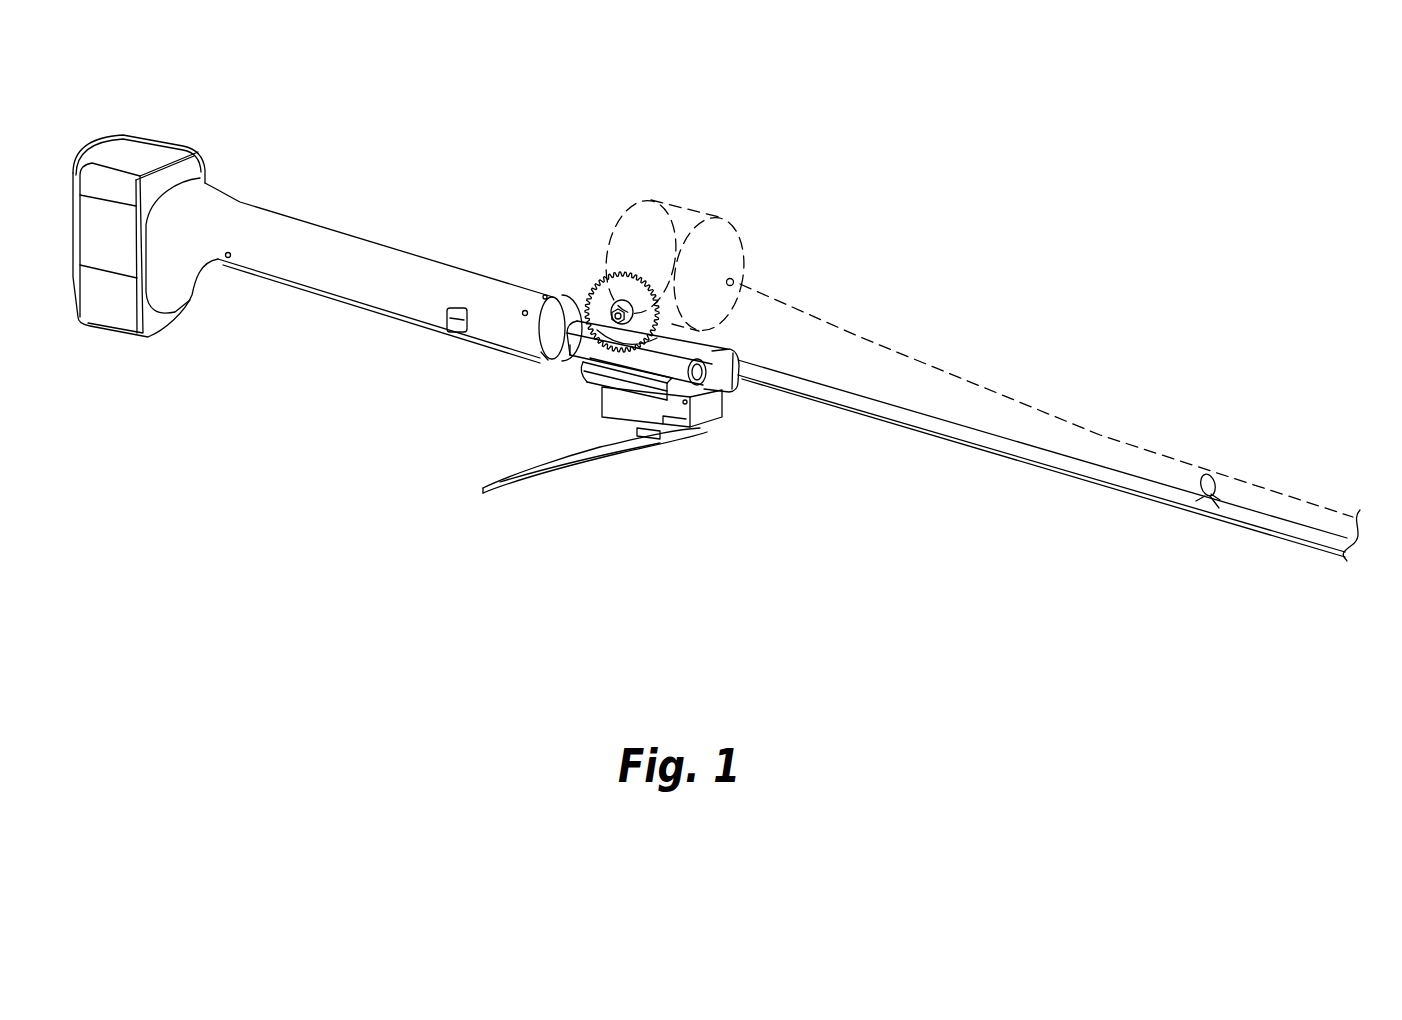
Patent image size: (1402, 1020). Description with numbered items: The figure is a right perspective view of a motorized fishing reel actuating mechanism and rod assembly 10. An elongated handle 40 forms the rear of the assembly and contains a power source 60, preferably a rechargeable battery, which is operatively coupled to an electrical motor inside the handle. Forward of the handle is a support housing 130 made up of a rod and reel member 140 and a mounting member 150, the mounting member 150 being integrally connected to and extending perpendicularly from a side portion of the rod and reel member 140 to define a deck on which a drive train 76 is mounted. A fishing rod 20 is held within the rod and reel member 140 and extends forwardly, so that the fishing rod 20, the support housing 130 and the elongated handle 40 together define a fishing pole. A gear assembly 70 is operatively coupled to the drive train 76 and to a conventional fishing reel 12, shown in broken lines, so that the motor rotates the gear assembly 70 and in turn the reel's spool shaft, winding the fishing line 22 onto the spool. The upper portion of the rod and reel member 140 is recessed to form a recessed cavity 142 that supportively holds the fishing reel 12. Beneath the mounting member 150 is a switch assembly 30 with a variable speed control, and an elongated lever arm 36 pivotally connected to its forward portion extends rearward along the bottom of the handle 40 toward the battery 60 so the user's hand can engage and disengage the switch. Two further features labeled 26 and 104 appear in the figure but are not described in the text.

The motorized fishing reel actuating mechanism and rod assembly 10 is at (925, 234).
The fishing reel 12 is at (690, 207).
The fishing rod 20 is at (990, 450).
The fishing line 22 is at (1003, 392).
The distal end cap of handle 26 is at (545, 294).
The switch assembly 30 is at (689, 460).
The elongated lever arm 36 is at (557, 470).
The elongated handle 40 is at (355, 310).
The power source 60 is at (163, 140).
The gear assembly 70 is at (588, 258).
The drive train 76 is at (574, 366).
The end cap bore 104 is at (541, 369).
The support housing 130 is at (738, 340).
The rod and reel member 140 is at (750, 403).
The recessed cavity 142 is at (741, 353).
The mounting member 150 is at (597, 387).